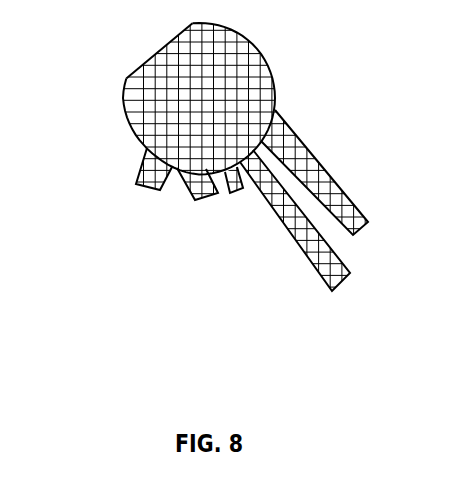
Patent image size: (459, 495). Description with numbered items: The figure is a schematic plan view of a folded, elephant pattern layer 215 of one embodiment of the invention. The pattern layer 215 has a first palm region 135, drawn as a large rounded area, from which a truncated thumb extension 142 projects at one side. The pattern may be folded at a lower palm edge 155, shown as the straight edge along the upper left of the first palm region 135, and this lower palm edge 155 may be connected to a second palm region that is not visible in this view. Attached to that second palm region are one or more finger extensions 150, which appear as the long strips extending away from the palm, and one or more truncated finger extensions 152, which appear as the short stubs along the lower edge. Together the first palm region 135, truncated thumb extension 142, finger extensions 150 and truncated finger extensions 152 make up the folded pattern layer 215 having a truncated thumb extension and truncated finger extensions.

The folded, elephant pattern layer 215 is at (215, 182).
The first palm region 135 is at (162, 105).
The lower palm edge 155 is at (150, 53).
The truncated thumb extension 142 is at (136, 185).
The truncated finger extension 152 is at (196, 199).
The finger extension 150 is at (332, 290).